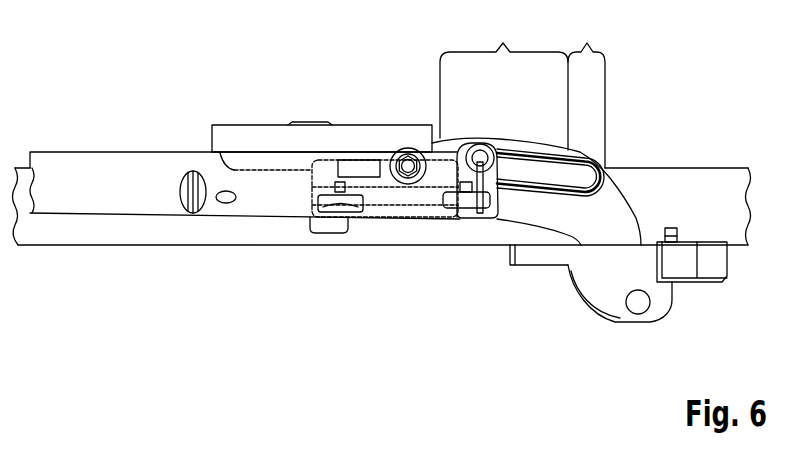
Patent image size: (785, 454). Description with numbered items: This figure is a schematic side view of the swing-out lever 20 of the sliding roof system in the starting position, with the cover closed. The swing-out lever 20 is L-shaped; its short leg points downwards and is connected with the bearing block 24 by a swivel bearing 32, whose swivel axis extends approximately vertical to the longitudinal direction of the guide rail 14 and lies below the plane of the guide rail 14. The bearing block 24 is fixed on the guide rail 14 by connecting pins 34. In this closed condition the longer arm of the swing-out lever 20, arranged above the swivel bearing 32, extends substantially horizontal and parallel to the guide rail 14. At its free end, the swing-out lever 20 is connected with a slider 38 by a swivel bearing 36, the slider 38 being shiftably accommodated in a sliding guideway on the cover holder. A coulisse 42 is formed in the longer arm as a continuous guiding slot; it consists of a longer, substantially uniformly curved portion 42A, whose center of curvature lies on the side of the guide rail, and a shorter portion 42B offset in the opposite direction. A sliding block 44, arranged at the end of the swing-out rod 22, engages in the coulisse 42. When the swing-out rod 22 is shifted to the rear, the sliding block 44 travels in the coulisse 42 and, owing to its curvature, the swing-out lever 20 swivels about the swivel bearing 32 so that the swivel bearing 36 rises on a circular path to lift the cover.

The guide rail 14 is at (131, 228).
The swing-out rod 22 is at (145, 162).
The slider 38 is at (370, 137).
The swivel bearing 36 is at (410, 148).
The sliding block 44 is at (481, 147).
The coulisse 42 is at (521, 160).
The longer curved portion of the coulisse 42A is at (504, 81).
The shorter portion of the coulisse 42B is at (586, 90).
The swing-out lever 20 is at (620, 202).
The connecting pins 34 is at (672, 228).
The bearing block 24 is at (610, 300).
The swivel bearing 32 is at (637, 305).